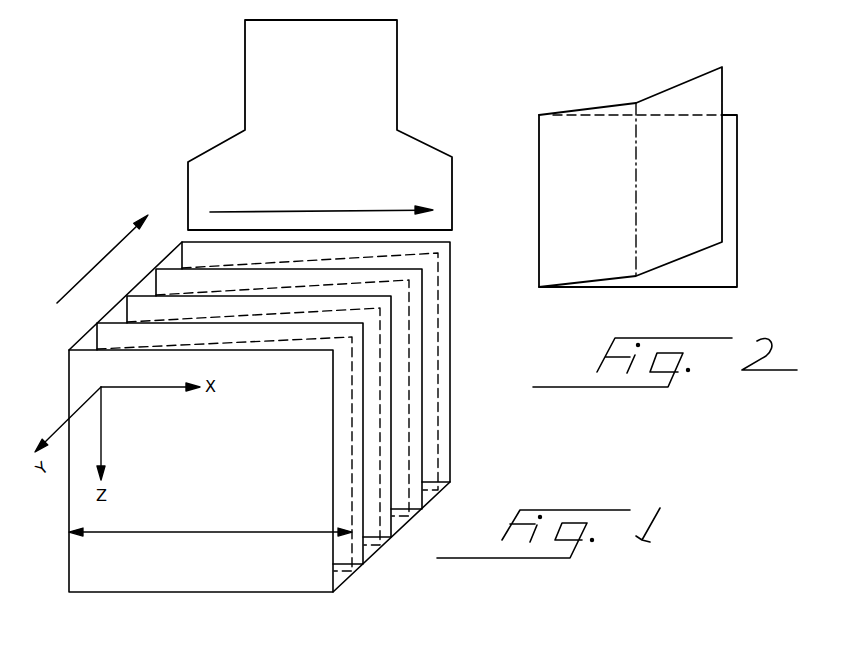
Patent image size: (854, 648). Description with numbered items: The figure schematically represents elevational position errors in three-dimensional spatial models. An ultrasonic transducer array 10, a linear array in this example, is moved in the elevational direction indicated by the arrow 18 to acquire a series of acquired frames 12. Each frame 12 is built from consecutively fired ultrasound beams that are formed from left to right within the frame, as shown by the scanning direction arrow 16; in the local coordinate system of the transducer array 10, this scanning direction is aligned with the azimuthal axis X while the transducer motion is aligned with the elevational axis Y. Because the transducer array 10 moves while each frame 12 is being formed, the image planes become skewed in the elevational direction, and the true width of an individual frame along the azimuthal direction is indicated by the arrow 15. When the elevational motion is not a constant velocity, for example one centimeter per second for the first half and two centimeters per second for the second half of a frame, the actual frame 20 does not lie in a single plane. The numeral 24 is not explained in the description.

In FIG. 1, the ultrasonic transducer array 10 is at (245, 45).
In FIG. 1, the acquired frame 12 is at (305, 583).
In FIG. 2, the acquired frame 12 is at (728, 266).
In FIG. 1, the arrow indicating true frame width 15 is at (218, 531).
In FIG. 1, the scanning direction arrow 16 is at (225, 212).
In FIG. 1, the elevational motion arrow 18 is at (107, 253).
In FIG. 2, the actual frame 20 is at (714, 83).
In FIG. 1, the array 24 is at (147, 641).